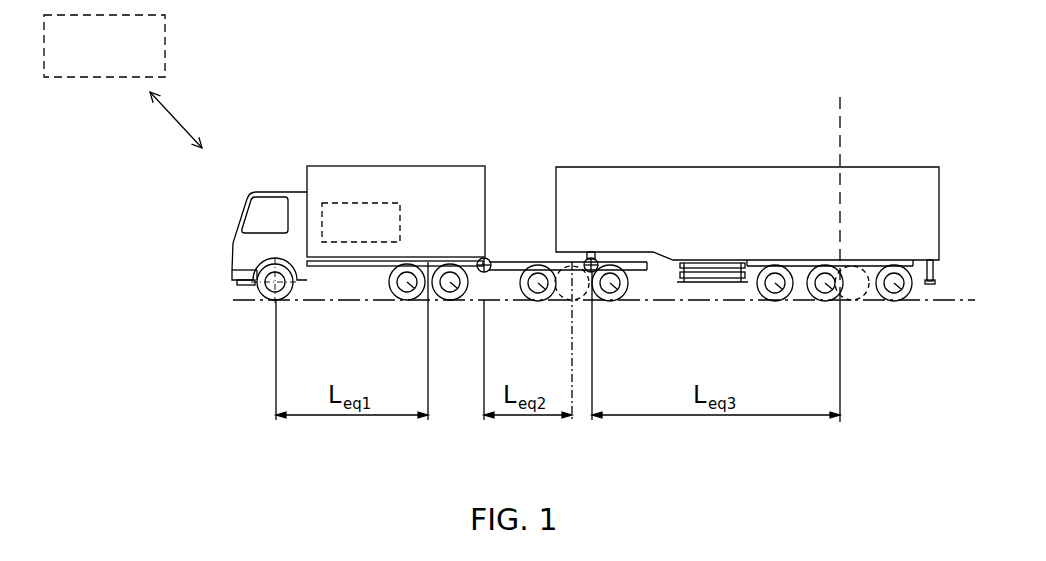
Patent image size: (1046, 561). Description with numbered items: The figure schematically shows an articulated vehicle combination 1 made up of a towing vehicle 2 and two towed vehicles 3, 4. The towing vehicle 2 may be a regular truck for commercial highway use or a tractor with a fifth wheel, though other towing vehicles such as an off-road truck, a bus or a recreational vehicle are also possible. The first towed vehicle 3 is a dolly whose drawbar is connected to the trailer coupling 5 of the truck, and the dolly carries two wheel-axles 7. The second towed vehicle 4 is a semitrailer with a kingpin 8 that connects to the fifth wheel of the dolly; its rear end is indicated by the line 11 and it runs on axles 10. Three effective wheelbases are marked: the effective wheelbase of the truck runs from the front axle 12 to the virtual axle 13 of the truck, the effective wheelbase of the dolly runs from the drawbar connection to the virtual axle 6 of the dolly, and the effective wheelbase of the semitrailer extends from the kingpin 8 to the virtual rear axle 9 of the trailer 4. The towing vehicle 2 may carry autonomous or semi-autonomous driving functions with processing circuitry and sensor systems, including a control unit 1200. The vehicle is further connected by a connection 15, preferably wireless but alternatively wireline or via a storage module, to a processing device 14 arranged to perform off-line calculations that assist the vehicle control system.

The articulated vehicle combination 1 is at (584, 240).
The towing vehicle 2 is at (388, 182).
The first towed vehicle 3 is at (546, 260).
The second towed vehicle 4 is at (753, 204).
The truck-dolly coupling 5 is at (487, 257).
The virtual axle of the dolly 6 is at (561, 297).
The wheel-axles 7 is at (534, 297).
The kingpin 8 is at (606, 260).
The virtual rear axle 9 is at (866, 305).
The semitrailer axles 10 is at (766, 300).
The rear end line of semitrailer 11 is at (843, 130).
The front axle 12 is at (268, 297).
The virtual axle of the truck 13 is at (413, 297).
The processing device 14 is at (104, 46).
The connection 15 is at (170, 120).
The control unit 1200 is at (361, 222).